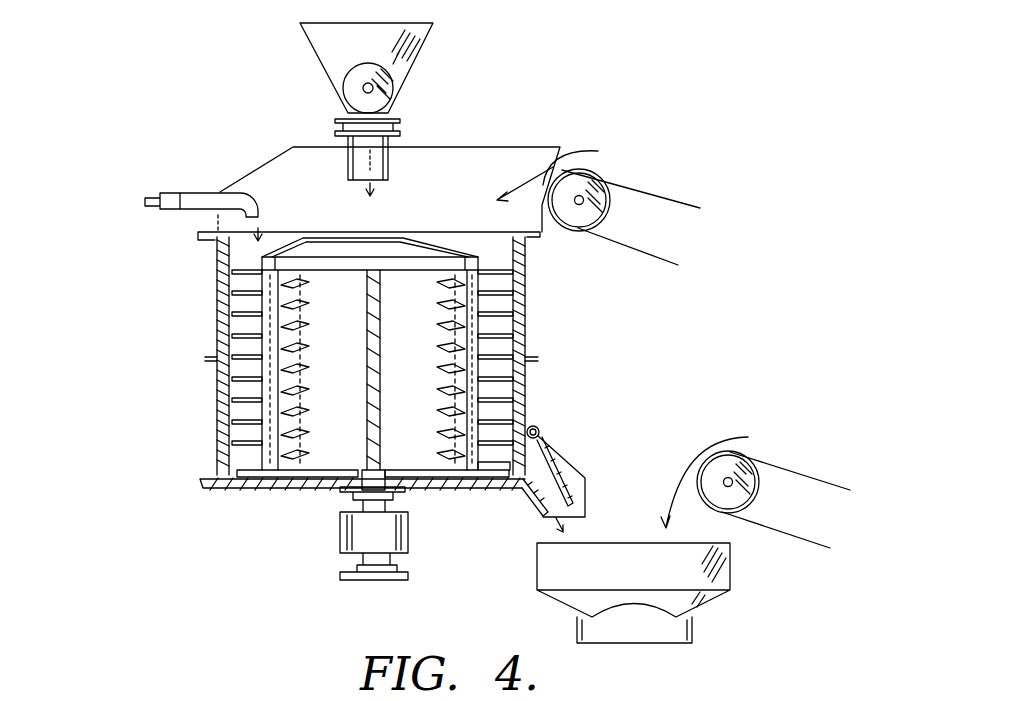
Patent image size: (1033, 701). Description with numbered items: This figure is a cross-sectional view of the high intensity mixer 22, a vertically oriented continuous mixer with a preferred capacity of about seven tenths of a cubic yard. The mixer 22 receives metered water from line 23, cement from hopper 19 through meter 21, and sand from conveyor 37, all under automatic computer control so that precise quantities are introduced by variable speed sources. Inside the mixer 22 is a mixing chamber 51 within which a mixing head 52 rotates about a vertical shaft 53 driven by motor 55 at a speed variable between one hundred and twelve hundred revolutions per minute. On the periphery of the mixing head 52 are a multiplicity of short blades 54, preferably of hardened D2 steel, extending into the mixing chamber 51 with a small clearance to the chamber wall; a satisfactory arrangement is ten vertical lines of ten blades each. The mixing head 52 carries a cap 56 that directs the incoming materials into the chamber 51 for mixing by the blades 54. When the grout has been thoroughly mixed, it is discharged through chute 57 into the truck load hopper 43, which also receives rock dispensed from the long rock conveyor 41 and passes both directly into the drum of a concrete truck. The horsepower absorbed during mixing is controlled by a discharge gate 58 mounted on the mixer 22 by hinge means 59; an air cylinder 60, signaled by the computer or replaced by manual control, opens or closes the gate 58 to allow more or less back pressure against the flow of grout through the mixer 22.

The hopper 19 is at (418, 45).
The meter 21 is at (400, 128).
The mixer 22 is at (218, 460).
The line 23 is at (145, 193).
The conveyor 37 is at (625, 208).
The long rock conveyor 41 is at (765, 500).
The truck load hopper 43 is at (700, 612).
The mixing chamber 51 is at (247, 255).
The mixing head 52 is at (330, 313).
The vertical shaft 53 is at (368, 348).
The short blades 54 is at (280, 412).
The motor 55 is at (338, 540).
The cap 56 is at (352, 248).
The chute 57 is at (590, 500).
The discharge gate 58 is at (555, 468).
The hinge means 59 is at (538, 426).
The air cylinder 60 is at (578, 468).